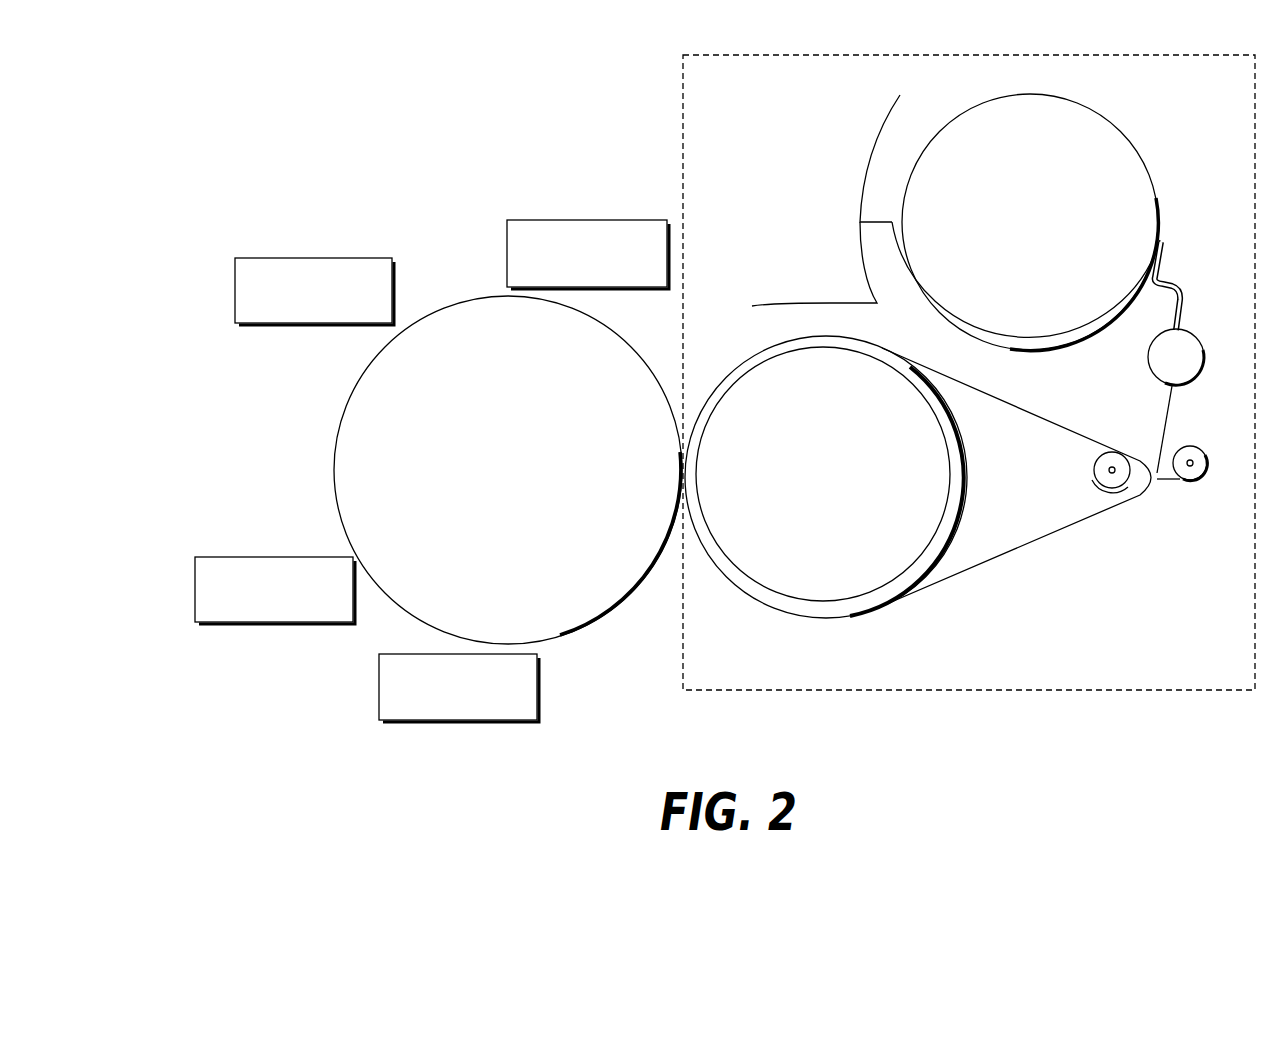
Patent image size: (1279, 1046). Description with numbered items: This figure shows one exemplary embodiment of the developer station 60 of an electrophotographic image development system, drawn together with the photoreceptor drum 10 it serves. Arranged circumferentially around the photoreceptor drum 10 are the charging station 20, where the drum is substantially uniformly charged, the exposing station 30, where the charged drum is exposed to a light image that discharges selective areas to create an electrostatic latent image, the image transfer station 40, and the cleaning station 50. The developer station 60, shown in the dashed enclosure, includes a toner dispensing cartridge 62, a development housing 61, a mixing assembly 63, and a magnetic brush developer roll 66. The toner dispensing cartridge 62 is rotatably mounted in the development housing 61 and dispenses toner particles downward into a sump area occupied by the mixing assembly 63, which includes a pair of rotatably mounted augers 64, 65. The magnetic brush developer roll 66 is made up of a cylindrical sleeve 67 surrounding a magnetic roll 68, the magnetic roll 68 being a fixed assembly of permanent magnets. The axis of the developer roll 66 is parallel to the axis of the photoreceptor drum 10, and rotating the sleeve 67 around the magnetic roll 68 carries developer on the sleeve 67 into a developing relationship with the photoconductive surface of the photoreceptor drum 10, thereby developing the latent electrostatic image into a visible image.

The photoreceptor drum 10 is at (335, 470).
The charging station 20 is at (342, 257).
The exposing station 30 is at (613, 218).
The image transfer station 40 is at (540, 688).
The cleaning station 50 is at (243, 556).
The developer station 60 is at (1058, 692).
The development housing 61 is at (1167, 256).
The toner dispensing cartridge 62 is at (1110, 124).
The mixing assembly 63 is at (1163, 487).
The auger 64 is at (1203, 452).
The auger 65 is at (1112, 493).
The magnetic brush developer roll 66 is at (750, 587).
The cylindrical sleeve 67 is at (814, 613).
The magnetic roll 68 is at (858, 582).